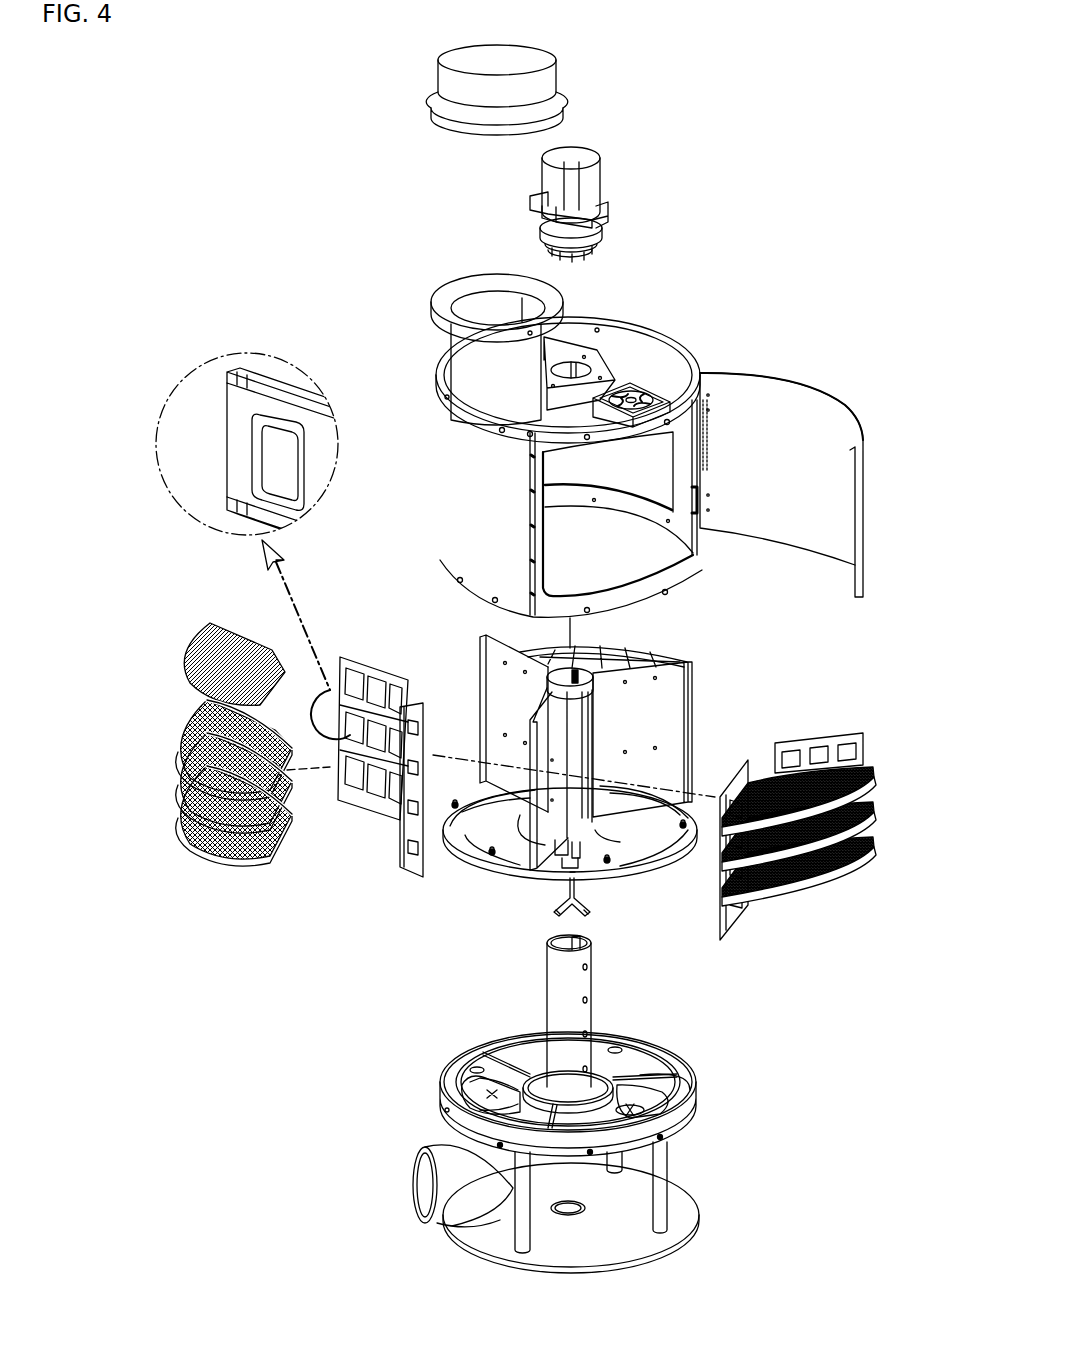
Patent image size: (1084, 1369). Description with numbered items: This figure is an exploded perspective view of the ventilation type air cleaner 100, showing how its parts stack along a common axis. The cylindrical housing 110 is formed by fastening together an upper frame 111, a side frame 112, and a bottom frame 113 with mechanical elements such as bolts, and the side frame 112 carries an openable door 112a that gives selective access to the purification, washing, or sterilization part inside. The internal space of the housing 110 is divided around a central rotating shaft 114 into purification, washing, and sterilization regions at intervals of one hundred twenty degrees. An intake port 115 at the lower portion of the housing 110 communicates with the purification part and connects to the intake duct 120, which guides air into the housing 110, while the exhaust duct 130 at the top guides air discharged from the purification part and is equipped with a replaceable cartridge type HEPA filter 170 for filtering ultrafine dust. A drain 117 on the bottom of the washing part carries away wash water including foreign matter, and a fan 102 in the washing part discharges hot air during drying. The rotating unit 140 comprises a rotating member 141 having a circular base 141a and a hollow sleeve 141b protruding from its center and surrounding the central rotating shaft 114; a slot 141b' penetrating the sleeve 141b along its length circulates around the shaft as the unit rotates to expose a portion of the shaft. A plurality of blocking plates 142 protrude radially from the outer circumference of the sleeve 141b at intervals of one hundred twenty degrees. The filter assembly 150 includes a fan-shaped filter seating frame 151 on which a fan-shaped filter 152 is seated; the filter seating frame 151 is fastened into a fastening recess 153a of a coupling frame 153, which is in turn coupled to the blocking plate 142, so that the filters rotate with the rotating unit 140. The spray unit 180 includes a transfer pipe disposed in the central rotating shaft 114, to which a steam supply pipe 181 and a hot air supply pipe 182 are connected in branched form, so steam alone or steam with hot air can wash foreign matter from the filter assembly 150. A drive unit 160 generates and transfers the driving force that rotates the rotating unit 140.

The ventilation type air cleaner 100 is at (866, 131).
The housing 110 is at (432, 503).
The upper frame 111 is at (640, 360).
The side frame 112 is at (700, 570).
The door 112a is at (800, 402).
The bottom frame 113 is at (603, 1117).
The central rotating shaft 114 is at (590, 1020).
The intake port 115 is at (490, 1085).
The drain 117 is at (688, 1085).
The intake duct 120 is at (422, 1185).
The exhaust duct 130 is at (448, 350).
The rotating unit 140 is at (606, 744).
The rotating member 141 is at (573, 883).
The base 141a is at (625, 860).
The sleeve 141b is at (603, 889).
The slot 141b' is at (625, 720).
The blocking plate 142 is at (682, 710).
The filter assembly 150 is at (884, 770).
The filter seating frame 151 is at (180, 735).
The filter 152 is at (190, 638).
The coupling frame 153 is at (358, 820).
The fastening recess 153a is at (240, 372).
The drive unit 160 is at (598, 185).
The HEPA filter 170 is at (565, 97).
The spray unit 180 is at (568, 890).
The steam supply pipe 181 is at (556, 906).
The hot air supply pipe 182 is at (575, 920).
The fan 102 is at (640, 396).